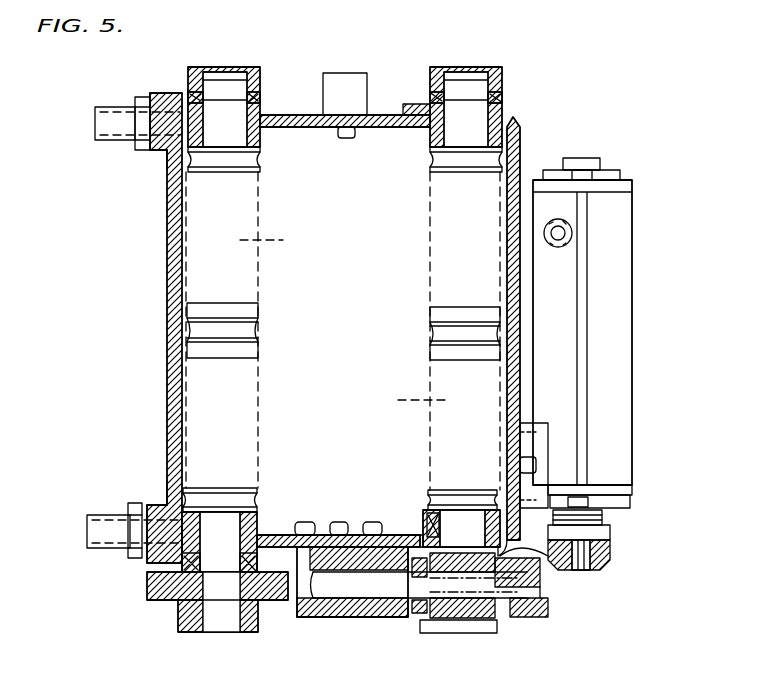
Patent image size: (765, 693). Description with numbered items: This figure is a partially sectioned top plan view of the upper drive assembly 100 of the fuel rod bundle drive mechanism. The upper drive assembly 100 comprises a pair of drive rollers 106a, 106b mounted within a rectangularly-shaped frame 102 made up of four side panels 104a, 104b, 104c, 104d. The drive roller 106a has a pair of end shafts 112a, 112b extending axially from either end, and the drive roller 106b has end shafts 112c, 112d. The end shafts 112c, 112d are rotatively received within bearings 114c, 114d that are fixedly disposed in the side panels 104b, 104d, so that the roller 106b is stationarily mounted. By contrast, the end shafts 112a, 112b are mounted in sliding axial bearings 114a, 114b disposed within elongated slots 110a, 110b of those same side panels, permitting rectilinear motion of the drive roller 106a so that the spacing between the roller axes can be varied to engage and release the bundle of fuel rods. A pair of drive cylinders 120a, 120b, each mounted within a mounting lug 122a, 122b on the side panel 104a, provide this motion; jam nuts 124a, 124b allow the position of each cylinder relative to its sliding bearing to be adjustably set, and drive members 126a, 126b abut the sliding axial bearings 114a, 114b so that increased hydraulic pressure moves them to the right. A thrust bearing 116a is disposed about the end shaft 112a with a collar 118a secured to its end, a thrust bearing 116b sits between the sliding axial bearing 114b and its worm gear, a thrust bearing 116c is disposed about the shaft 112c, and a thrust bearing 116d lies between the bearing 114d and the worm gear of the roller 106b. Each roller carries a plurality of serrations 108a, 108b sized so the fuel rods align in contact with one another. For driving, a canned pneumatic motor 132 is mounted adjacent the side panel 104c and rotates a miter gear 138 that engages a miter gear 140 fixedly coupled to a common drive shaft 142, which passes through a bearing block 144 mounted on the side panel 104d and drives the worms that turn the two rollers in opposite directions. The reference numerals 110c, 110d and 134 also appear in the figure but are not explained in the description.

The upper drive assembly 100 is at (358, 354).
The frame 102 is at (351, 305).
The side panel 104a is at (167, 268).
The side panel 104b is at (282, 128).
The side panel 104c is at (522, 152).
The side panel 104d is at (300, 535).
The drive roller 106a is at (282, 242).
The drive roller 106b is at (395, 402).
The serrations 108a is at (245, 331).
The serrations 108b is at (432, 326).
The elongated slot 110a is at (262, 118).
The elongated slot 110b is at (255, 492).
The top right bore 110c is at (432, 128).
The bottom right bore 110d is at (424, 530).
The end shaft 112a is at (225, 105).
The end shaft 112b is at (222, 622).
The end shaft 112c is at (495, 75).
The end shaft 112d is at (462, 500).
The sliding axial bearing 114a is at (255, 172).
The sliding axial bearing 114b is at (258, 557).
The bearing 114c is at (410, 104).
The bearing 114d is at (428, 520).
The thrust bearing 116a is at (186, 98).
The thrust bearing 116b is at (160, 585).
The thrust bearing 116c is at (502, 100).
The thrust bearing 116d is at (548, 576).
The collar 118a is at (190, 70).
The drive cylinder 120a is at (95, 122).
The drive cylinder 120b is at (90, 540).
The mounting lug 122a is at (150, 142).
The mounting lug 122b is at (160, 510).
The jam nut 124a is at (140, 148).
The jam nut 124b is at (130, 506).
The drive member 126a is at (172, 160).
The drive member 126b is at (172, 470).
The canned pneumatic motor 132 is at (602, 367).
The motor mounting block 134 is at (536, 430).
The miter gear 138 is at (610, 556).
The miter gear 140 is at (522, 617).
The common drive shaft 142 is at (362, 588).
The bearing block 144 is at (300, 612).